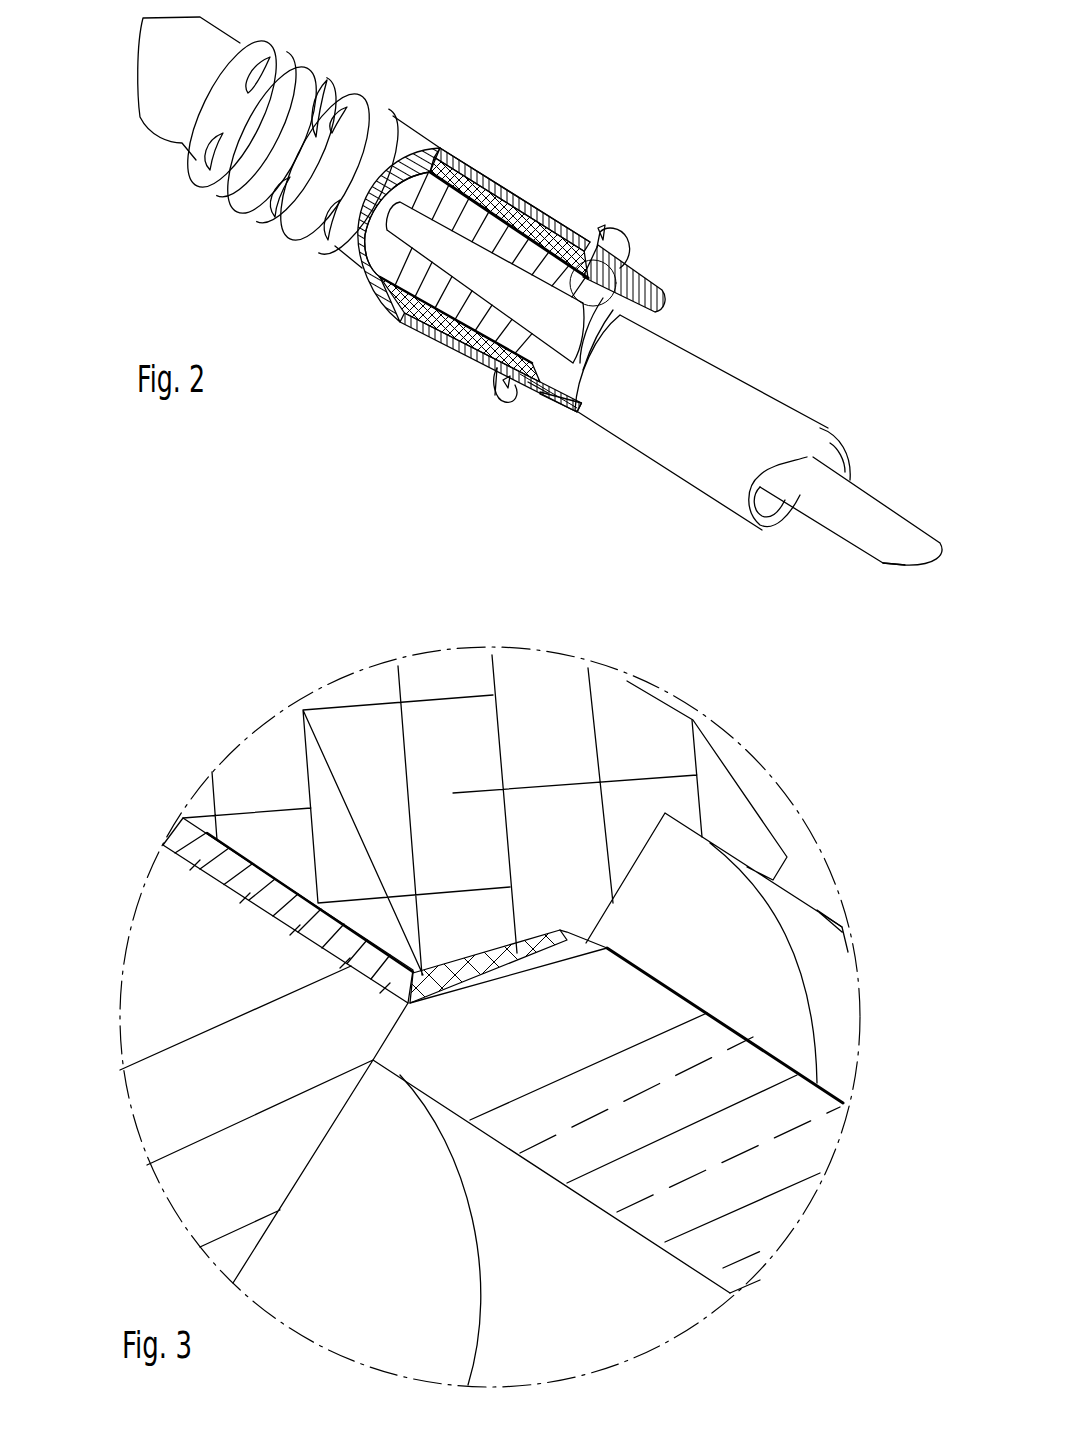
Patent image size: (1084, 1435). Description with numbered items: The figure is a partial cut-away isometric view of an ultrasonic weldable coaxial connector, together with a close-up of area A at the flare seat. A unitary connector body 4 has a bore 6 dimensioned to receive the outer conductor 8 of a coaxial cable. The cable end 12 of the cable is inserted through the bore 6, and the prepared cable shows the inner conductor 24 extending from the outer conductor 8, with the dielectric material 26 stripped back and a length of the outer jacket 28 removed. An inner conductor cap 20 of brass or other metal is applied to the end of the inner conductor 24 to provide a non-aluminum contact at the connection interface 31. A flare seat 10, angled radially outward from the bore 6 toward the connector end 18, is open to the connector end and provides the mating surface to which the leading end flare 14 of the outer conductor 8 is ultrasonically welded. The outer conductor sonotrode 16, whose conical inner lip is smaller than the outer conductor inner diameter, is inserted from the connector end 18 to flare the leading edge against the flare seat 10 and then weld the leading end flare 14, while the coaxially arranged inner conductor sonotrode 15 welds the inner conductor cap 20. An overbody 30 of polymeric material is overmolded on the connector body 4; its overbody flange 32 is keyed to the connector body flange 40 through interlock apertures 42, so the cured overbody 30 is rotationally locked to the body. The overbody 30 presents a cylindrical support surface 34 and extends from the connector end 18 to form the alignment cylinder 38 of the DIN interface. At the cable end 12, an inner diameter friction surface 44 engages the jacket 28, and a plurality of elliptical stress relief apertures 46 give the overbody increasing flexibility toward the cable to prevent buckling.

In FIG. 2, the connector body 4 is at (520, 185).
In FIG. 3, the connector body 4 is at (447, 757).
In FIG. 2, the bore 6 is at (453, 343).
In FIG. 3, the bore 6 is at (203, 1102).
In FIG. 2, the outer conductor 8 is at (350, 265).
In FIG. 3, the outer conductor 8 is at (173, 840).
In FIG. 2, the flare seat 10 is at (537, 390).
In FIG. 3, the flare seat 10 is at (460, 962).
In FIG. 2, the cable end 12 is at (132, 53).
In FIG. 3, the cable end 12 is at (98, 913).
In FIG. 2, the leading end flare 14 is at (647, 287).
In FIG. 2, the inner conductor sonotrode 15 is at (840, 517).
In FIG. 2, the outer conductor sonotrode 16 is at (750, 447).
In FIG. 3, the outer conductor sonotrode 16 is at (733, 1243).
In FIG. 2, the connector end 18 is at (937, 573).
In FIG. 3, the connector end 18 is at (837, 1240).
In FIG. 2, the inner conductor cap 20 is at (585, 340).
In FIG. 2, the inner conductor 24 is at (422, 237).
In FIG. 2, the dielectric material 26 is at (413, 313).
In FIG. 3, the dielectric material 26 is at (163, 907).
In FIG. 2, the outer jacket 28 is at (173, 97).
In FIG. 2, the overbody 30 is at (347, 213).
In FIG. 3, the overbody 30 is at (780, 820).
In FIG. 2, the connection interface 31 is at (548, 420).
In FIG. 2, the overbody flange 32 is at (617, 250).
In FIG. 2, the cylindrical support surface 34 is at (553, 213).
In FIG. 2, the alignment cylinder 38 is at (560, 417).
In FIG. 3, the alignment cylinder 38 is at (822, 897).
In FIG. 2, the connector body flange 40 is at (510, 373).
In FIG. 2, the interlock apertures 42 is at (603, 230).
In FIG. 2, the inner diameter friction surface 44 is at (412, 180).
In FIG. 2, the stress relief apertures 46 is at (263, 150).
In FIG. 2, the area A is at (622, 272).